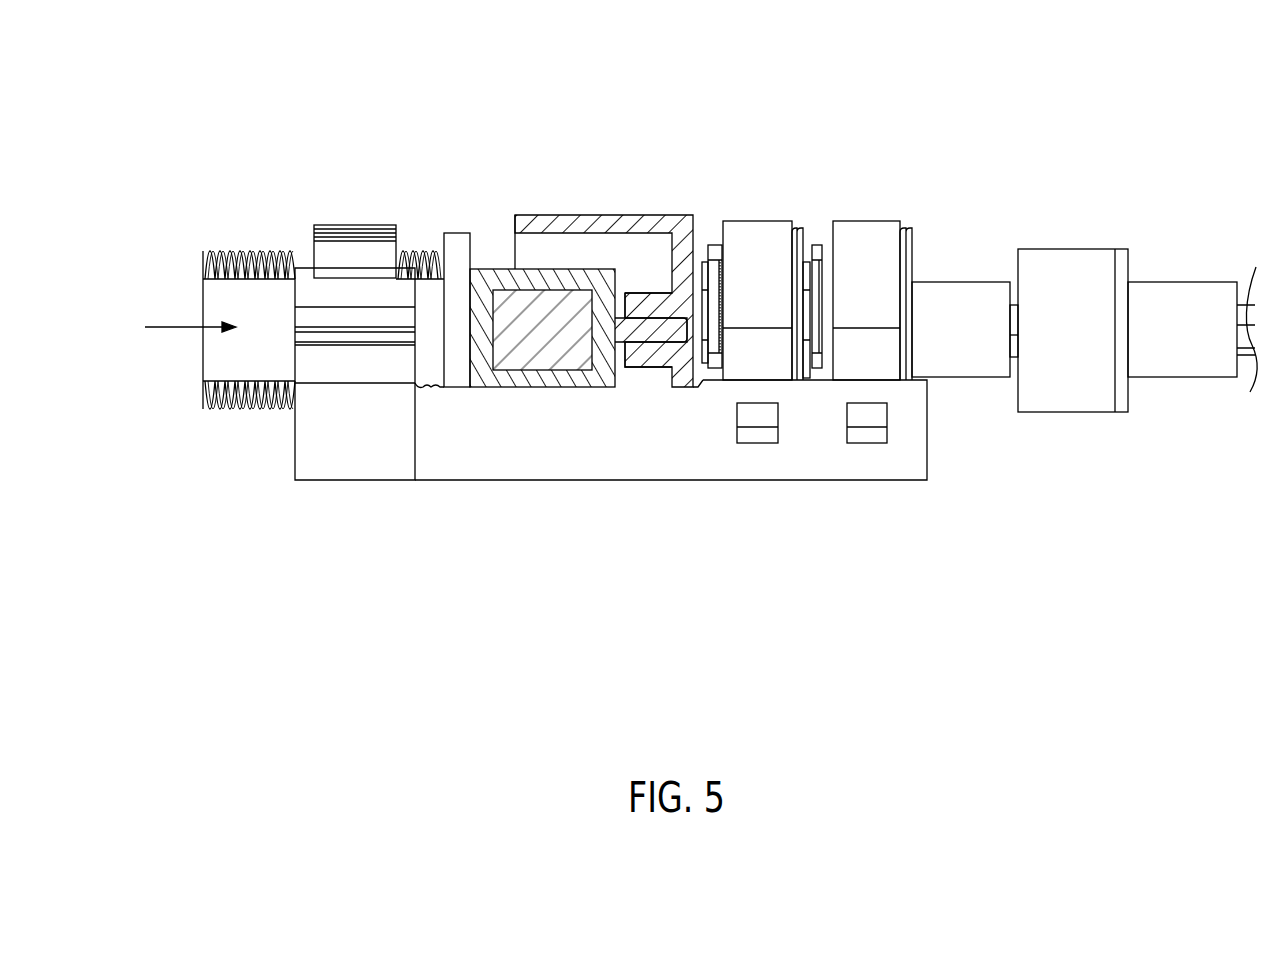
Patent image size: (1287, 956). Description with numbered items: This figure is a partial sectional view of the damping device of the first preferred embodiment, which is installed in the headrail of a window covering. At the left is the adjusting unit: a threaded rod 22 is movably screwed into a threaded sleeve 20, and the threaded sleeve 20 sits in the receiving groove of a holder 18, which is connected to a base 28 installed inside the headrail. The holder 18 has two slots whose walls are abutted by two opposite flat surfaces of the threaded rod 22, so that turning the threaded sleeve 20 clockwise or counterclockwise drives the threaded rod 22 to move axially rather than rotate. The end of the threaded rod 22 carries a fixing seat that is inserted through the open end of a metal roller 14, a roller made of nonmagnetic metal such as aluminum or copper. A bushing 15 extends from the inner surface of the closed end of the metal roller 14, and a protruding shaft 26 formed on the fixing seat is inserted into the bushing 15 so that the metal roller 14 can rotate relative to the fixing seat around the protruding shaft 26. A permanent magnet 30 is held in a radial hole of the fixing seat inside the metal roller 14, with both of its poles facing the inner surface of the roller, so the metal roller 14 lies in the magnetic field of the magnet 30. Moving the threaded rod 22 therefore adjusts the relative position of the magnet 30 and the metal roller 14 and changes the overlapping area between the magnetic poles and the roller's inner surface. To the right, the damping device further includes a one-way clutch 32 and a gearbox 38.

The metal roller 14 is at (555, 215).
The bushing 15 is at (657, 282).
The holder 18 is at (358, 455).
The threaded sleeve 20 is at (363, 225).
The threaded rod 22 is at (242, 250).
The protruding shaft 26 is at (652, 332).
The base 28 is at (720, 455).
The magnet 30 is at (560, 340).
The one-way clutch 32 is at (1126, 248).
The gearbox 38 is at (868, 221).